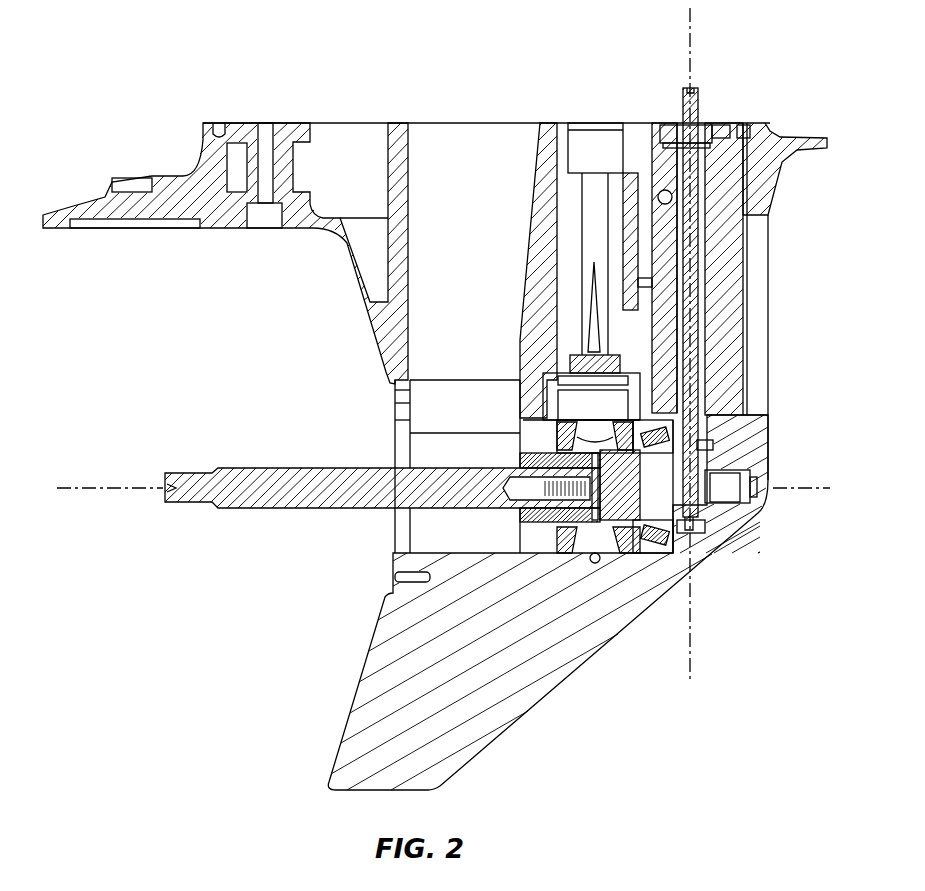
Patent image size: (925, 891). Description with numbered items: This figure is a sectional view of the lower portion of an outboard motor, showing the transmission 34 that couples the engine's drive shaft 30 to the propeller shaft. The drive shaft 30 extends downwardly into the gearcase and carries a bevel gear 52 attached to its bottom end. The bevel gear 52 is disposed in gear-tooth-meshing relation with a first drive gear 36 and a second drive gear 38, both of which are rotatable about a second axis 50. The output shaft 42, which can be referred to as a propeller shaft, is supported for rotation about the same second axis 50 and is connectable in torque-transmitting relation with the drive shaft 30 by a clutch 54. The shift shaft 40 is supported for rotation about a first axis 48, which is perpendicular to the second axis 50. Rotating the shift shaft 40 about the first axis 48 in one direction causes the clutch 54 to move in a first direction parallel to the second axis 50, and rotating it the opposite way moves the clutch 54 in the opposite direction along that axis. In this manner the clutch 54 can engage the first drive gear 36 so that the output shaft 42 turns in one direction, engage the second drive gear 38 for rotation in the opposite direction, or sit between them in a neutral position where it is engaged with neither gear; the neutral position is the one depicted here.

The drive shaft 30 is at (593, 232).
The transmission 34 is at (602, 531).
The first drive gear 36 is at (560, 553).
The second drive gear 38 is at (630, 550).
The shift shaft 40 is at (697, 259).
The output shaft 42 is at (373, 498).
The first axis 48 is at (692, 53).
The second axis 50 is at (112, 487).
The bevel gear 52 is at (617, 437).
The clutch 54 is at (643, 487).